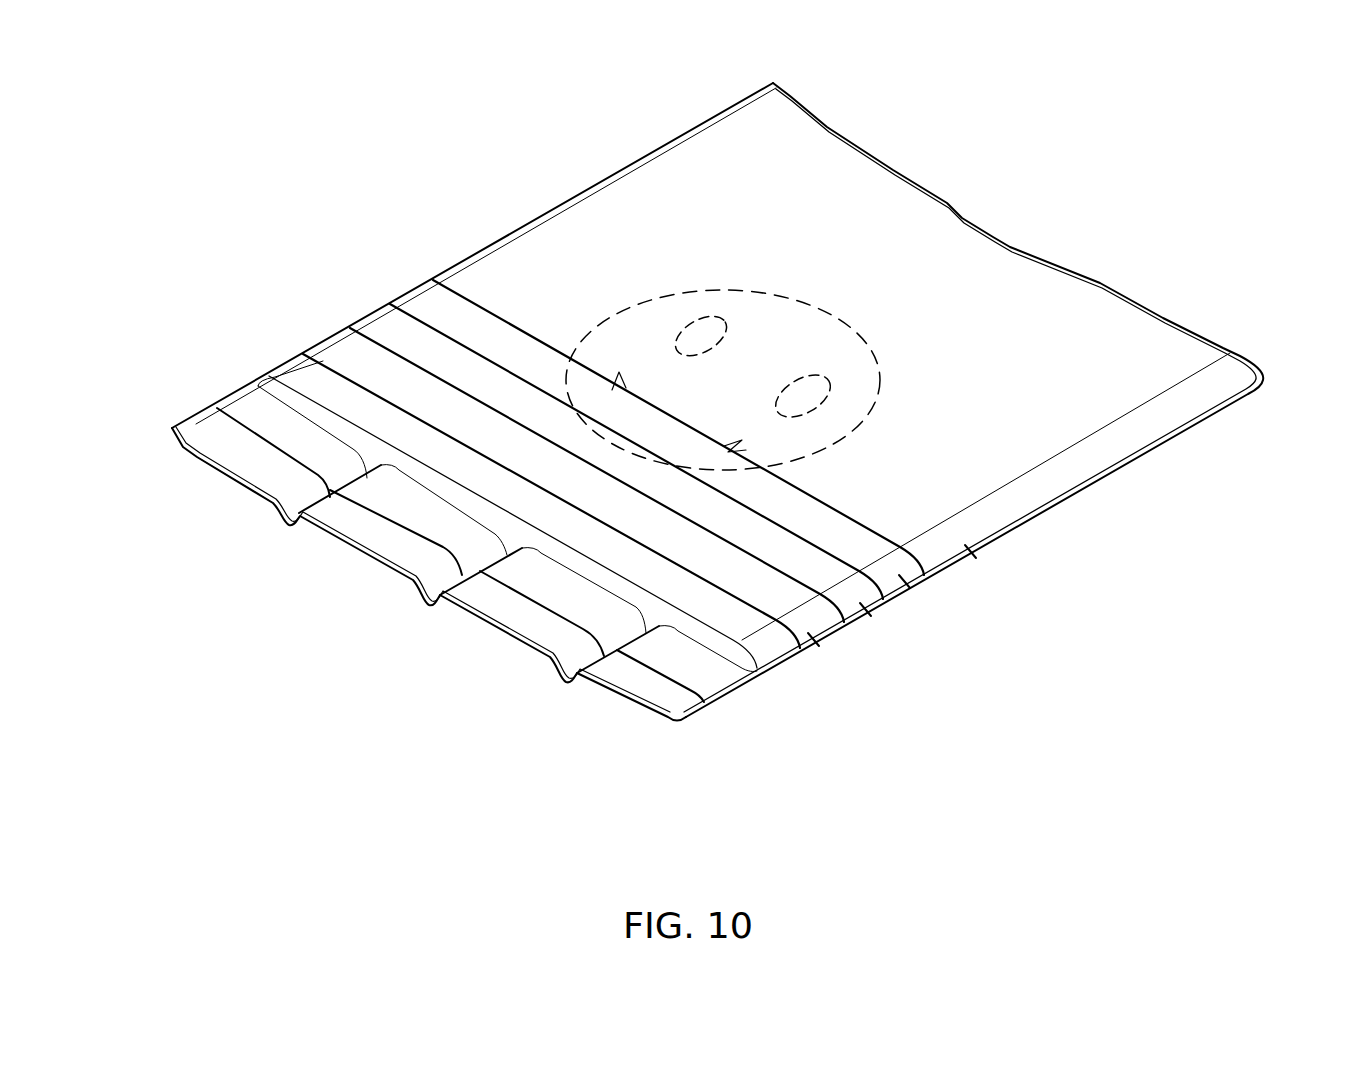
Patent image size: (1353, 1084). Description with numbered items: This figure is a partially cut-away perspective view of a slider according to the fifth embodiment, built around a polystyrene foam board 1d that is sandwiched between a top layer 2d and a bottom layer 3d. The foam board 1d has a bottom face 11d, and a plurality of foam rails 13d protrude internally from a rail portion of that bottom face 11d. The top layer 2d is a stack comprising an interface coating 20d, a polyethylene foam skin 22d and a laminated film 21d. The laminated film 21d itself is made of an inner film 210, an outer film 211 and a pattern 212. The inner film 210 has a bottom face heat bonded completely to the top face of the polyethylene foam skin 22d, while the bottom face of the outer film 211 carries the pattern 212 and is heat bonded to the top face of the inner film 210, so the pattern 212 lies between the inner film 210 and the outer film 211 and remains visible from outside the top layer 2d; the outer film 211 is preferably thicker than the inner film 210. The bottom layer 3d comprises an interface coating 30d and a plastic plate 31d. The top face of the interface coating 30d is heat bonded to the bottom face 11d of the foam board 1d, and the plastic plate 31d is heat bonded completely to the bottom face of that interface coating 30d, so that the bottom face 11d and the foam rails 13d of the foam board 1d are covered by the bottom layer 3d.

The foam board 1d is at (717, 445).
The bottom face 11d is at (692, 632).
The foam rails 13d is at (375, 467).
The top layer 2d is at (749, 559).
The interface coating 20d is at (812, 635).
The laminated film 21d is at (761, 492).
The inner film 210 is at (900, 575).
The outer film 211 is at (965, 545).
The pattern 212 is at (877, 382).
The polyethylene foam skin 22d is at (860, 603).
The bottom layer 3d is at (237, 318).
The interface coating 30d is at (247, 403).
The plastic plate 31d is at (203, 433).